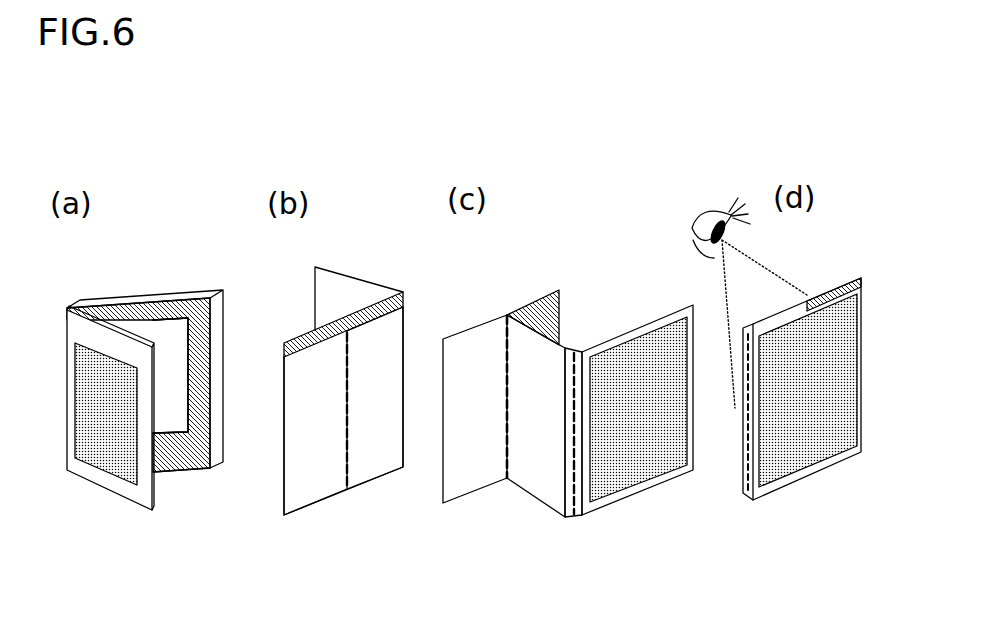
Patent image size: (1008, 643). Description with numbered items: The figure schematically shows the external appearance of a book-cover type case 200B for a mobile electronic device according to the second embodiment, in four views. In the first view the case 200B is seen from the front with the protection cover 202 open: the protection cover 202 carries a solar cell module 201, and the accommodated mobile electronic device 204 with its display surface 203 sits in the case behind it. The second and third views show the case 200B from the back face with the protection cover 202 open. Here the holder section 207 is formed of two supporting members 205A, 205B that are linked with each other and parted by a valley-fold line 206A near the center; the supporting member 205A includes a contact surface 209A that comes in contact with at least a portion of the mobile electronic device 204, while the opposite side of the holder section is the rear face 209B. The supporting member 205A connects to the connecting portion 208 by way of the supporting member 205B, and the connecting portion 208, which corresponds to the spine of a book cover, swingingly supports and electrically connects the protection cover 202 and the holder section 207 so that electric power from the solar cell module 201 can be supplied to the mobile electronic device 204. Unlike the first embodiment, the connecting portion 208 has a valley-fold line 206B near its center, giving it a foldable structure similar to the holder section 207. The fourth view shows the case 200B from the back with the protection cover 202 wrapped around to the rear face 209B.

The case for a mobile electronic device 200B is at (410, 141).
The solar cell module 201 is at (121, 468).
The protection cover 202 is at (145, 498).
The display surface 203 is at (157, 332).
The mobile electronic device 204 is at (192, 460).
The supporting member 205A is at (307, 492).
The supporting member 205B is at (377, 463).
The valley-fold line 206A is at (346, 434).
The valley-fold line 206B is at (575, 438).
The holder section 207 is at (276, 494).
The connecting portion 208 is at (570, 510).
The contact surface 209A is at (456, 326).
The rear face 209B is at (456, 483).